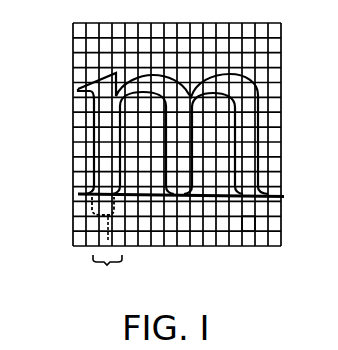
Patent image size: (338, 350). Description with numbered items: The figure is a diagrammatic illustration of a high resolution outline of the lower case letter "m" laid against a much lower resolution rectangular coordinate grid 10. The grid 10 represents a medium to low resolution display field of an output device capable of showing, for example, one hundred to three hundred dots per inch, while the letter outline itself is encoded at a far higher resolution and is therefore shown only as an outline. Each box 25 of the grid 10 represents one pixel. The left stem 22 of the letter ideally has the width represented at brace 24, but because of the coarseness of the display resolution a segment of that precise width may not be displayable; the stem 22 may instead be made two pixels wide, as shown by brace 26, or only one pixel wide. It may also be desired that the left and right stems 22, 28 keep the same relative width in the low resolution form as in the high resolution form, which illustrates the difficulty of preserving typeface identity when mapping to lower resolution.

The rectangular coordinate grid 10 is at (291, 68).
The left stem 22 is at (92, 135).
The brace 24 is at (88, 214).
The box 25 is at (258, 228).
The brace 26 is at (107, 273).
The right stem 28 is at (248, 152).